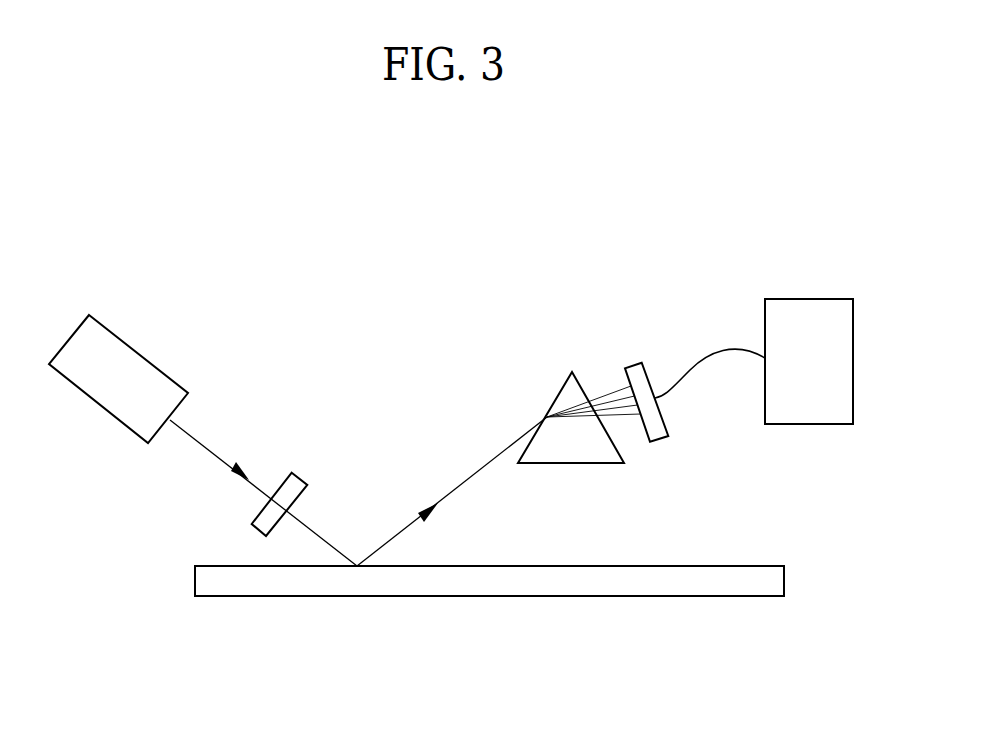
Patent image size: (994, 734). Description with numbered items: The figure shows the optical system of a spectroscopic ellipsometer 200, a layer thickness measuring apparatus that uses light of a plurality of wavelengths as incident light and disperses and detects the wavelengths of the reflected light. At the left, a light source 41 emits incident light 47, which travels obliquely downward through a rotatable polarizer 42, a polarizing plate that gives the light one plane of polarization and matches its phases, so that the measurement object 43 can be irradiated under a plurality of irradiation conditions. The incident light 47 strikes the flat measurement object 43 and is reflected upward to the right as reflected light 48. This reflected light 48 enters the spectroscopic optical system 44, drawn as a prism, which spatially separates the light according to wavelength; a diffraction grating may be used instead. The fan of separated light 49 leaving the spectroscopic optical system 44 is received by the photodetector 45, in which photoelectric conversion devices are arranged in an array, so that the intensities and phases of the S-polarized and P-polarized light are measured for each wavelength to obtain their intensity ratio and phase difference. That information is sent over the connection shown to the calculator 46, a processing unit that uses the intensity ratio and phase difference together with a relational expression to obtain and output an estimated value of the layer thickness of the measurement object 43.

The spectroscopic ellipsometer 200 is at (382, 240).
The light source 41 is at (135, 357).
The polarizer 42 is at (297, 482).
The measurement object 43 is at (298, 590).
The spectroscopic optical system 44 is at (560, 398).
The photodetector 45 is at (632, 363).
The calculator 46 is at (810, 308).
The incident light 47 is at (212, 453).
The reflected light 48 is at (473, 475).
The separated light 49 is at (607, 397).